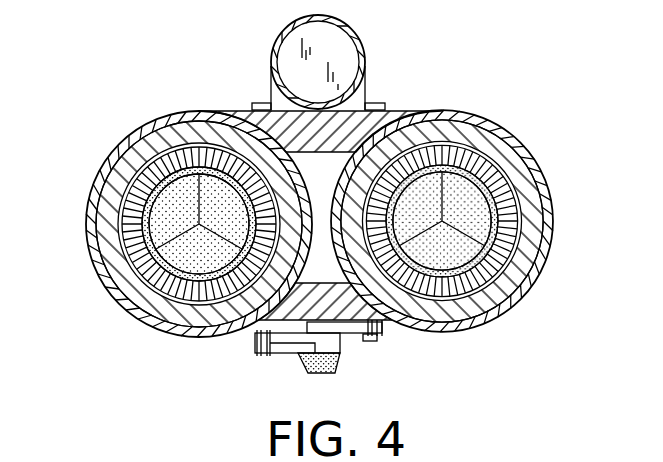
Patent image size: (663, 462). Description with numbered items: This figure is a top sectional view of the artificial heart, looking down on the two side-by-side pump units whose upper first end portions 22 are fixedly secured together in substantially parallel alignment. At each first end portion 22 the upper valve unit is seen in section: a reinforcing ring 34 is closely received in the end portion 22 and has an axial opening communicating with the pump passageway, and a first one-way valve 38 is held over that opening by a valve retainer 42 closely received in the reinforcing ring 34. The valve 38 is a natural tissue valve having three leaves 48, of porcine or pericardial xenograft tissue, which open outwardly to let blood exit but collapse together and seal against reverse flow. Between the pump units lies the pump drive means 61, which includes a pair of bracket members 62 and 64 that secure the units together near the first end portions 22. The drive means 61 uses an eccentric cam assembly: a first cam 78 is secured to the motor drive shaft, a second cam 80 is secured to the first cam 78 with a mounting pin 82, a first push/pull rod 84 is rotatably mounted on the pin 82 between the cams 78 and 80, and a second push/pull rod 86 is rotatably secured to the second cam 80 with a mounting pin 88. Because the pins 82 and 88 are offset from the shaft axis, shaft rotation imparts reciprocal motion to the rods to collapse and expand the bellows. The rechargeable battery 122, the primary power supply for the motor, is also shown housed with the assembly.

The first end portion 22 is at (167, 118).
The valve retainer 42 is at (127, 140).
The reinforcing ring 34 is at (145, 153).
The leaves 48 is at (160, 246).
The first one-way valve 38 is at (137, 269).
The bracket member 62 is at (321, 305).
The rechargeable battery 122 is at (340, 62).
The bracket member 64 is at (243, 112).
The pump drive means 61 is at (336, 359).
The second cam member 80 is at (393, 336).
The second push/pull rod 86 is at (385, 328).
The mounting pin 88 is at (373, 342).
The mounting pin 82 is at (262, 356).
The first push/pull rod 84 is at (253, 343).
The first cam member 78 is at (342, 348).